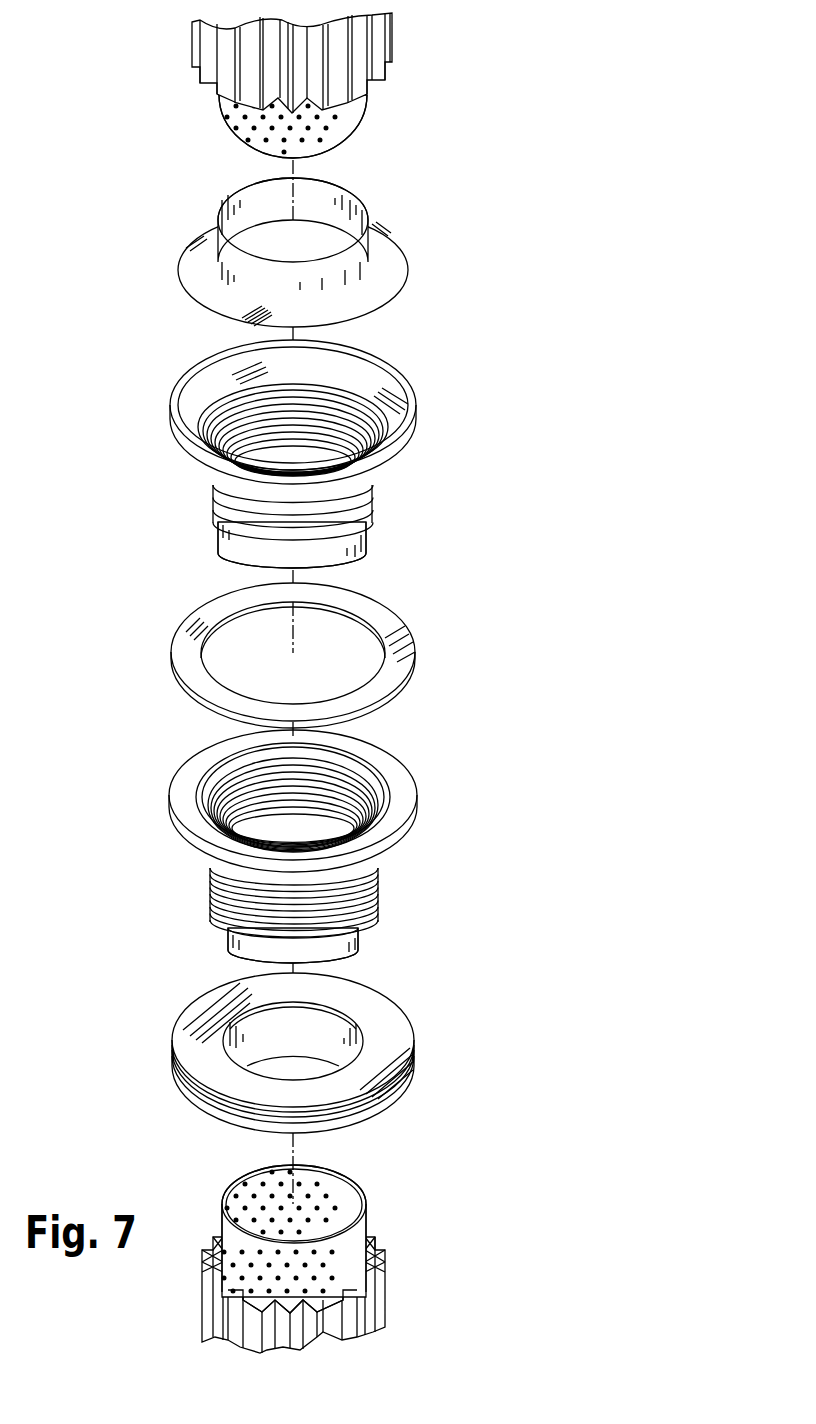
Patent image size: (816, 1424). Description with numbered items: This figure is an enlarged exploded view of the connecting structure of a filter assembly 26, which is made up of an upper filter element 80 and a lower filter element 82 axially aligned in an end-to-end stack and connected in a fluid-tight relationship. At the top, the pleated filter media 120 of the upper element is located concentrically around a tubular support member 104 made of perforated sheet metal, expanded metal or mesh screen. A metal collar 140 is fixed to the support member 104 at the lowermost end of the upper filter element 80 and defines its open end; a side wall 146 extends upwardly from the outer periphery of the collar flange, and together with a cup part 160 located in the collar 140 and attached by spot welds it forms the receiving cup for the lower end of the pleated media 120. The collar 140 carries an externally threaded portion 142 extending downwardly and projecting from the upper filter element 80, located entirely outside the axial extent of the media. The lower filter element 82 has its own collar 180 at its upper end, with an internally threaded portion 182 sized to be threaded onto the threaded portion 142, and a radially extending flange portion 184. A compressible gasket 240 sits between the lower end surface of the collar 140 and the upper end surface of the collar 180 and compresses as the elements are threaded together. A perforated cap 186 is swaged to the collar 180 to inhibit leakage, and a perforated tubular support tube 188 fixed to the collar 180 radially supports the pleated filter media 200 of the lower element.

The filter assembly 26 is at (500, 208).
The upper filter element 80 is at (292, 85).
The pleated filter media 120 is at (227, 43).
The tubular support member 104 is at (349, 138).
The cup part 160 is at (392, 199).
The collar 140 is at (303, 454).
The side wall 146 is at (383, 457).
The externally threaded portion 142 is at (337, 516).
The compressible gasket 240 is at (383, 623).
The collar 180 is at (303, 846).
The flange portion 184 is at (393, 788).
The internally threaded portion 182 is at (227, 892).
The cap 186 is at (413, 1040).
The lower filter element 82 is at (340, 1259).
The perforated tubular support tube 188 is at (363, 1228).
The pleated filter media 200 is at (337, 1316).